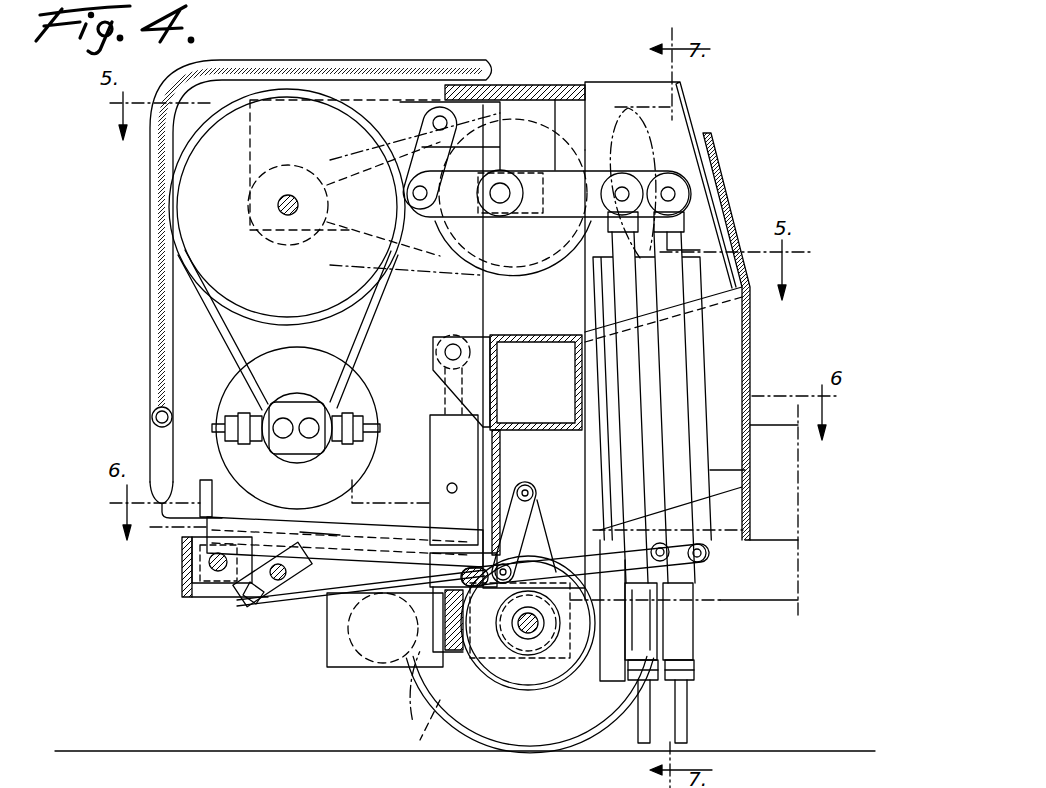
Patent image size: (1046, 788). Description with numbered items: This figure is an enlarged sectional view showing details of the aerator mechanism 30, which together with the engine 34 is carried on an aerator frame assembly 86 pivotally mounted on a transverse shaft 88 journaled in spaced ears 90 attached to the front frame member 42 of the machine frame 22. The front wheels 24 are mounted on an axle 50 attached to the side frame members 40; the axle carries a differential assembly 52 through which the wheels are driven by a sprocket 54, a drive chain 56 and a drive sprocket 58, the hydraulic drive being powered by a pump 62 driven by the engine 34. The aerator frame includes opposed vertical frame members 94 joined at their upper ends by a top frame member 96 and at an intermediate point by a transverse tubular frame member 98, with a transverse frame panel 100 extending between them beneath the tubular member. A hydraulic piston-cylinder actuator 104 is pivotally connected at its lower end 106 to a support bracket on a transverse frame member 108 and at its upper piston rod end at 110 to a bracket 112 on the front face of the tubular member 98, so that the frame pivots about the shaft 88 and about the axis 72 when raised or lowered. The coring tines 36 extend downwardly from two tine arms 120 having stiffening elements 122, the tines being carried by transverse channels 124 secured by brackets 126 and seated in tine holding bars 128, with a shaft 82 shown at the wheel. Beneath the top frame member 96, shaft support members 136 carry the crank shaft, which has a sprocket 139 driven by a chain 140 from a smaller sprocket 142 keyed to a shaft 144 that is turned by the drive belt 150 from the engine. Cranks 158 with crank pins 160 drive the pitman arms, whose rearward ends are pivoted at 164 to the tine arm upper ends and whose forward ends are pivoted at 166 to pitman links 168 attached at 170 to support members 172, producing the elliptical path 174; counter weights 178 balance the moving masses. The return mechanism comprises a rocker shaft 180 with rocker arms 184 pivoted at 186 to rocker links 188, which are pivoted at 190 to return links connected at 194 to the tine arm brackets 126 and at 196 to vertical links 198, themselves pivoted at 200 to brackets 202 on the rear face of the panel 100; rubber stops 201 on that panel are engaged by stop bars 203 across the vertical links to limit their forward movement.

The frame 22 is at (770, 566).
The front wheels 24 is at (432, 700).
The aerator mechanism 30 is at (300, 67).
The engine 34 is at (370, 398).
The coring tines 36 is at (688, 706).
The side frame members 40 is at (742, 600).
The front frame member 42 is at (182, 585).
The axle 50 is at (533, 655).
The differential assembly 52 is at (540, 752).
The sprocket 54 is at (575, 690).
The drive chain 56 is at (465, 700).
The drive sprocket 58 is at (327, 660).
The pump 62 is at (302, 405).
The pivot axis 72 is at (800, 484).
The axle 82 is at (523, 640).
The aerator frame assembly 86 is at (208, 492).
The transverse shaft 88 is at (215, 572).
The spaced ears 90 is at (192, 552).
The vertical frame members 94 is at (490, 292).
The top frame member 96 is at (545, 85).
The transverse tubular frame member 98 is at (535, 335).
The transverse frame panel 100 is at (500, 462).
The hydraulic piston-cylinder actuator 104 is at (430, 424).
The lower end 106 is at (443, 610).
The transverse frame member 108 is at (447, 643).
The pivotal connection 110 is at (450, 343).
The bracket 112 is at (433, 350).
The tine arms 120 is at (752, 467).
The stiffening elements 122 is at (745, 335).
The transverse channels 124 is at (700, 652).
The brackets 126 is at (693, 605).
The tine holding bars 128 is at (695, 668).
The shaft support members 136 is at (548, 107).
The sprocket 139 is at (612, 170).
The chain 140 is at (462, 240).
The smaller sprocket 142 is at (398, 178).
The shaft 144 is at (277, 202).
The drive belt 150 is at (220, 333).
The cranks 158 is at (505, 228).
The crank pins 160 is at (503, 182).
The pivotal connection 164 is at (675, 190).
The pivotal connection 166 is at (412, 198).
The pitman links 168 is at (408, 157).
The pivotal attachment 170 is at (433, 123).
The support members 172 is at (470, 110).
The elliptical path 174 is at (655, 155).
The counter weights 178 is at (540, 240).
The rocker shaft 180 is at (286, 600).
The rocker arms 184 is at (240, 600).
The pivotal connection 186 is at (276, 582).
The rocker links 188 is at (330, 553).
The pivotal connection 190 is at (500, 582).
The pivotal connection 194 is at (705, 553).
The pivotal connection 196 is at (530, 540).
The vertical links 198 is at (552, 522).
The pivotal connection 200 is at (535, 492).
The rubber stops 201 is at (478, 522).
The brackets 202 is at (452, 483).
The stop bars 203 is at (352, 498).